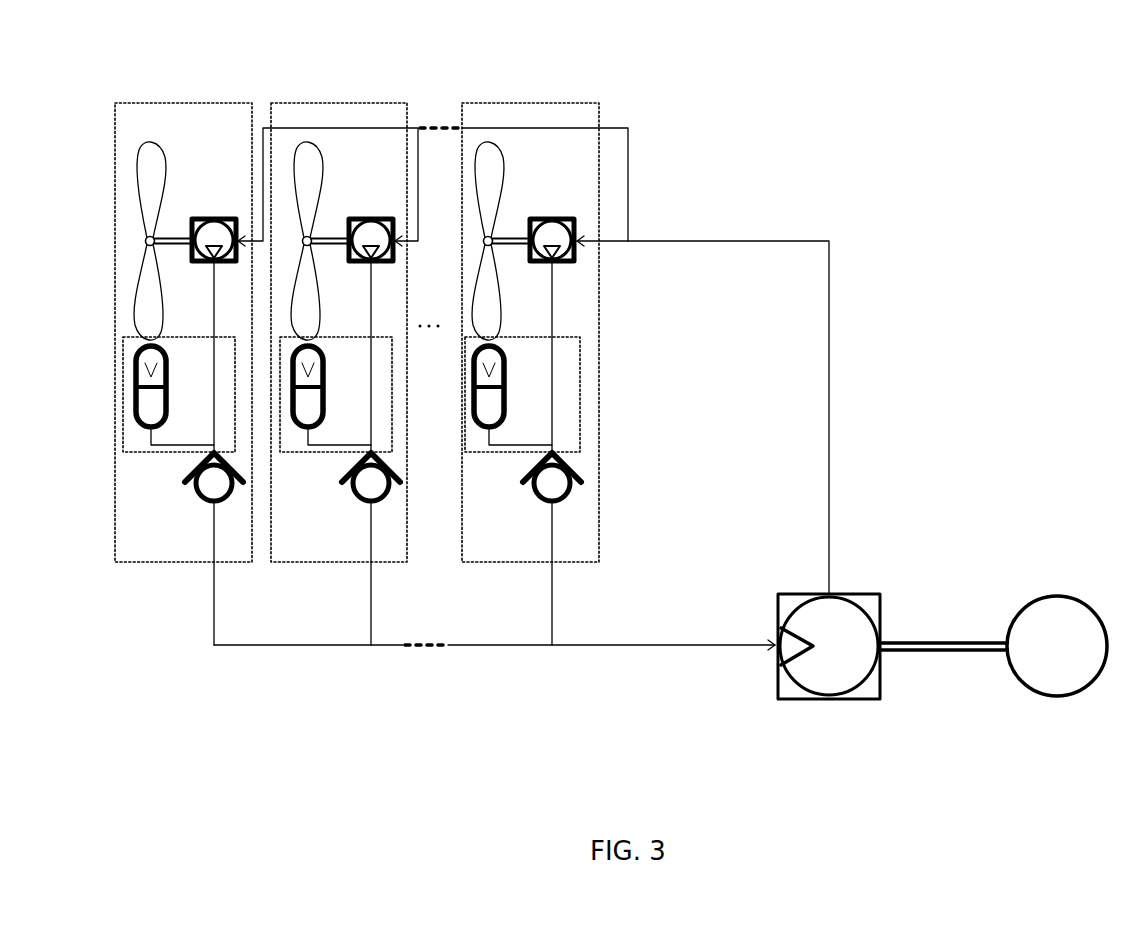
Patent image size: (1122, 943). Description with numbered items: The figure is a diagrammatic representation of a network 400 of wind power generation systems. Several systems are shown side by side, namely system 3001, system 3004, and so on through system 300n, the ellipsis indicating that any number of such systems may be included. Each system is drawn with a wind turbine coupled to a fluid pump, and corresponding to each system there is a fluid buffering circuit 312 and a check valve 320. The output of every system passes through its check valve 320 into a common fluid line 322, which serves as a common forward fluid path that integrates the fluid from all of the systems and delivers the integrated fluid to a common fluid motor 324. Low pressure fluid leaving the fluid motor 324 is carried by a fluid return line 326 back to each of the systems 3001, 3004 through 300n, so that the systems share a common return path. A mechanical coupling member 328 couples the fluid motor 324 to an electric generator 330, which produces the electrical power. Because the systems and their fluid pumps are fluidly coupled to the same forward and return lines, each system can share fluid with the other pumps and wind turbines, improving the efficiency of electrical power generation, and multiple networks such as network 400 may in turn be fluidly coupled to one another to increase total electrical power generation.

The wind power generation system 3001 is at (195, 334).
The wind power generation system 3004 is at (367, 98).
The wind power generation system 300n is at (525, 98).
The fluid buffering circuit 312 is at (132, 452).
The check valve 320 is at (208, 504).
The fluid line 322 is at (712, 652).
The fluid motor 324 is at (838, 700).
The fluid return line 326 is at (835, 482).
The mechanical coupling member 328 is at (947, 652).
The electric generator 330 is at (1063, 698).
The network of wind power generation systems 400 is at (927, 130).